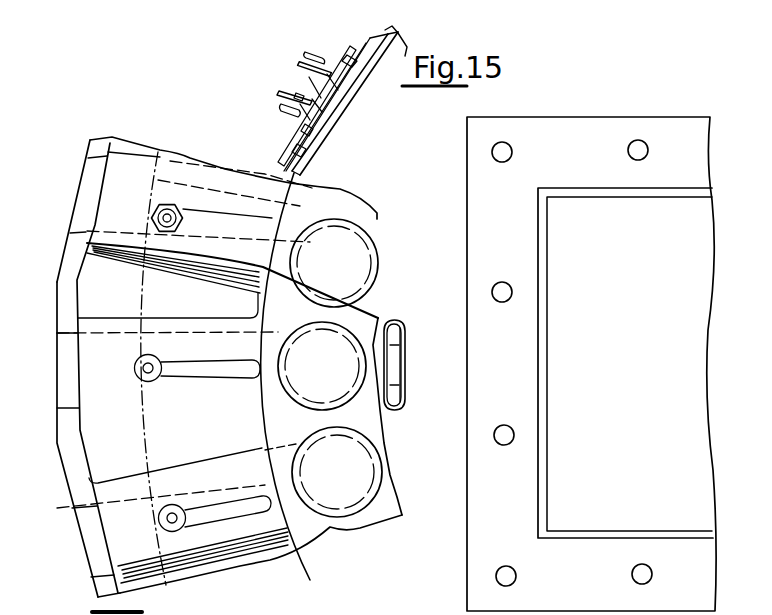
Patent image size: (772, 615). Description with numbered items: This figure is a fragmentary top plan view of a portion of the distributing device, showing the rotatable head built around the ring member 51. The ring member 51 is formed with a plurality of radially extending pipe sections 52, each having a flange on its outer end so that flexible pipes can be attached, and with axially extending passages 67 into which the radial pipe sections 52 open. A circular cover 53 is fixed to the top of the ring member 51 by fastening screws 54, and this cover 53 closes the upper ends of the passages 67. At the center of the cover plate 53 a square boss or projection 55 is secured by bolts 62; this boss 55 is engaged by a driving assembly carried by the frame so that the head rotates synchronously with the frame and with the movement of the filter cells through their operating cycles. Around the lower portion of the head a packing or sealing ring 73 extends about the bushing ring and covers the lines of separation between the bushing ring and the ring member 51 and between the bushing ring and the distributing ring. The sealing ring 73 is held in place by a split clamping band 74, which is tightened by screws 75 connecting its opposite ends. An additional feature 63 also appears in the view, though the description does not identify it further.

The ring member 51 is at (330, 528).
The radially extending pipe sections 52 is at (99, 143).
The circular cover 53 is at (222, 177).
The fastening screws 54 is at (168, 206).
The square boss 55 is at (573, 192).
The bolts 62 is at (503, 150).
The slot 63 is at (405, 344).
The axially extending passages 67 is at (64, 404).
The packing or sealing ring 73 is at (380, 32).
The split clamping band 74 is at (296, 152).
The screws 75 is at (303, 86).